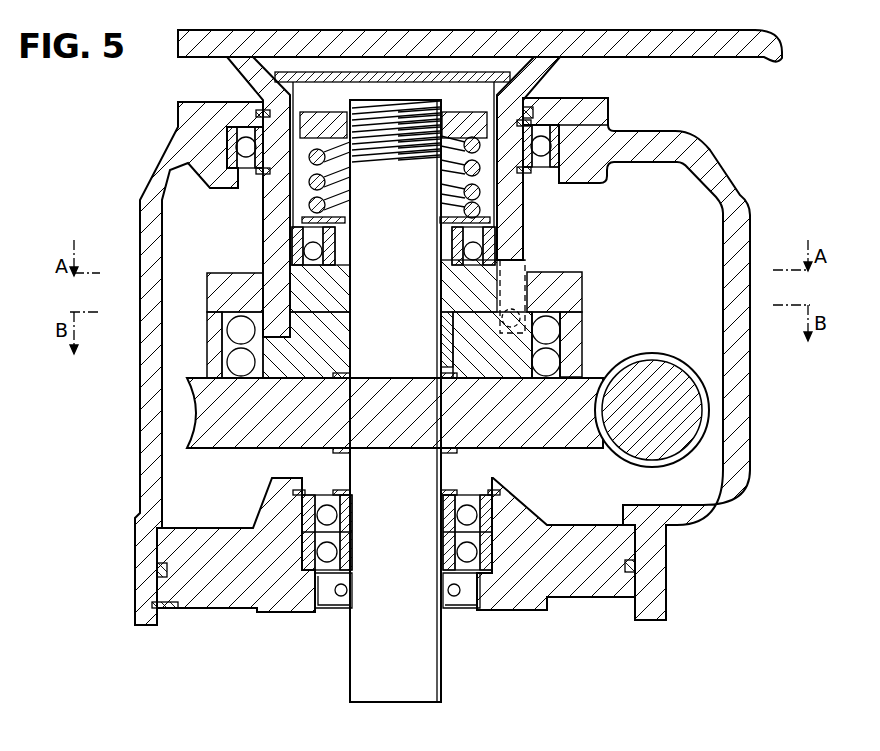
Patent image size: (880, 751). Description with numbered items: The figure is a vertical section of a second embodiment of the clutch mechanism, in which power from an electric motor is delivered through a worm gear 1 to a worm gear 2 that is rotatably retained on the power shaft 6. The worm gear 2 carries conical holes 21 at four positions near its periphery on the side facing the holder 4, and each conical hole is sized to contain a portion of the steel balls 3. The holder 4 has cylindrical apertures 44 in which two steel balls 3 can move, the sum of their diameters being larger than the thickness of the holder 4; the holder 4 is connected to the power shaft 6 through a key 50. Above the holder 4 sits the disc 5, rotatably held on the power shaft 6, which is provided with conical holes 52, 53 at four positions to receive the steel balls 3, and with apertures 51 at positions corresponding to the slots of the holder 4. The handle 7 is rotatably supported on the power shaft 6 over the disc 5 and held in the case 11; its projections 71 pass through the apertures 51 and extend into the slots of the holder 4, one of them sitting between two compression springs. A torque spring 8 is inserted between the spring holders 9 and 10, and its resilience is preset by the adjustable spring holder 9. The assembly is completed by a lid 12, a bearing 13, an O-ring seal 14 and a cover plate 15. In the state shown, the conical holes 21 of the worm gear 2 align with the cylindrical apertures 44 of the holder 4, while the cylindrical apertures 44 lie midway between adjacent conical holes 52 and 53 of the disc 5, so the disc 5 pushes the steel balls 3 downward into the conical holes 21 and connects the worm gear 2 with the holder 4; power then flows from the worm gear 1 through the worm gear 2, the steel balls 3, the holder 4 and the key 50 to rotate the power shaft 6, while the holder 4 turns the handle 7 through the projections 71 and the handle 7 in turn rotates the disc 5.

The worm gear 1 is at (673, 372).
The worm gear 2 is at (577, 430).
The steel balls 3 is at (590, 351).
The holder 4 is at (587, 323).
The disc 5 is at (577, 283).
The power shaft 6 is at (415, 652).
The handle 7 is at (747, 33).
The torque spring 8 is at (477, 167).
The spring holder 9 is at (460, 117).
The spring holder 10 is at (480, 210).
The case 11 is at (727, 185).
The lid 12 is at (603, 110).
The bearing 13 is at (230, 143).
The O-ring seal 14 is at (158, 570).
The cover plate 15 is at (310, 72).
The conical holes 21 is at (240, 387).
The cylindrical apertures 44 is at (222, 342).
The key 50 is at (433, 337).
The apertures 51 is at (255, 275).
The conical holes 52 is at (292, 250).
The conical holes 53 is at (500, 262).
The projections 71 is at (300, 290).